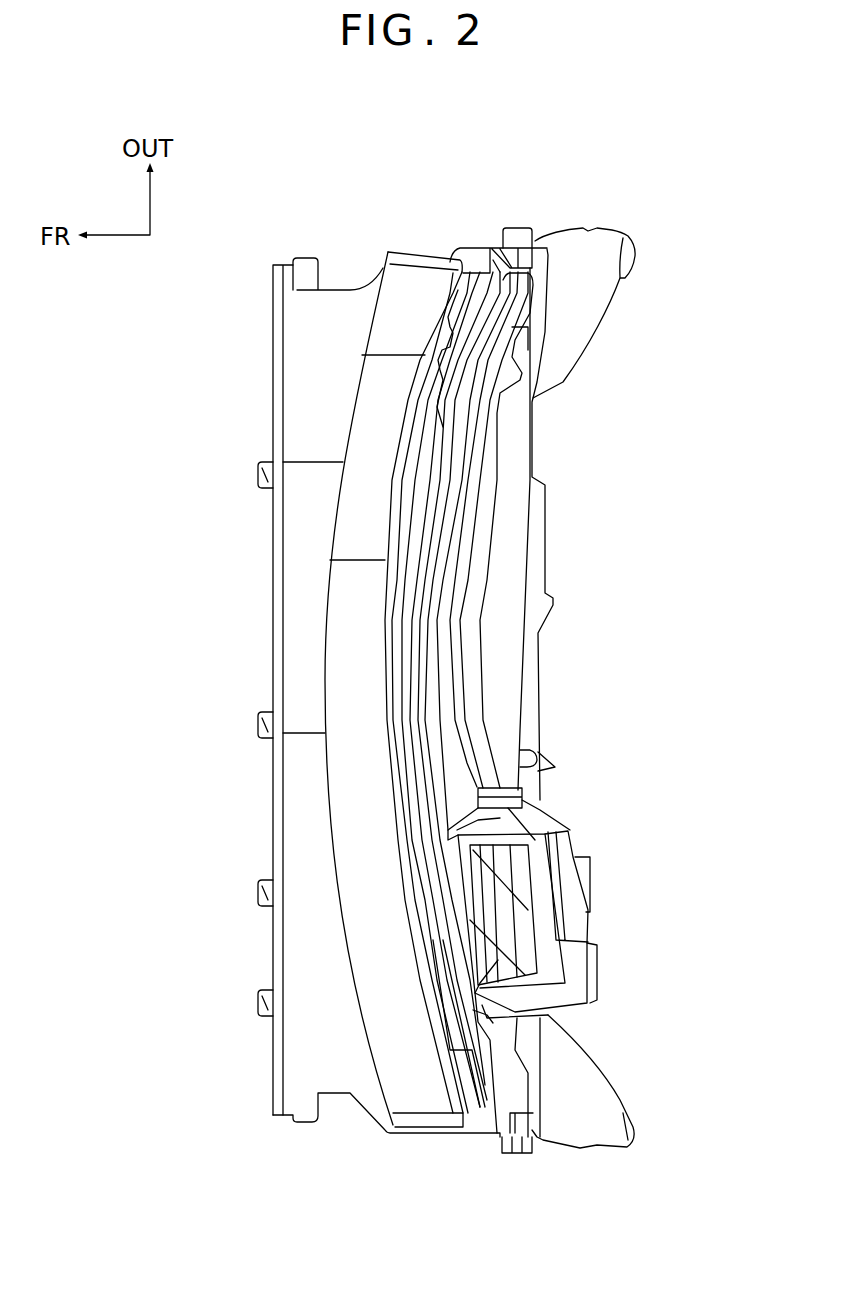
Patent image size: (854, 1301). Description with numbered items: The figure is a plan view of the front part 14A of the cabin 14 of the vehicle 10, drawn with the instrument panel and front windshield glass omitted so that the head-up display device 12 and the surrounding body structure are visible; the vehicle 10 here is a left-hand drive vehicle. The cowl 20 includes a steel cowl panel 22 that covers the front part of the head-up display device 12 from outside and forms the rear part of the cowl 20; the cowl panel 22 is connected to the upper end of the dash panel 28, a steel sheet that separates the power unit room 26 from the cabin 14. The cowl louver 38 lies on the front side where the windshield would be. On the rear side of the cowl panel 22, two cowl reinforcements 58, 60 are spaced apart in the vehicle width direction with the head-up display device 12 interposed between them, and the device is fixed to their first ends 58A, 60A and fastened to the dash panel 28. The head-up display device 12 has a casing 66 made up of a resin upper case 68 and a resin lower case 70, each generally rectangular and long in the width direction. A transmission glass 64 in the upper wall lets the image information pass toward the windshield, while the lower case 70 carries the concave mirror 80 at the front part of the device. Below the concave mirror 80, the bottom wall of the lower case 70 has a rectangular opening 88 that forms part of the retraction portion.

The vehicle 10 is at (668, 190).
The head-up display device 12 is at (610, 870).
The cabin 14 is at (750, 505).
The front part 14A is at (625, 514).
The cowl 20 is at (470, 243).
The cowl panel 22 is at (445, 812).
The power unit room 26 is at (206, 694).
The dash panel 28 is at (546, 618).
The cowl louver 38 is at (413, 277).
The cowl reinforcement 58 is at (622, 1095).
The first end 58A is at (545, 1037).
The cowl reinforcement 60 is at (544, 657).
The first end 60A is at (490, 773).
The transmission glass 64 is at (500, 912).
The casing 66 is at (597, 846).
The upper case 68 is at (594, 981).
The lower case 70 is at (598, 1008).
The concave mirror 80 is at (520, 915).
The opening 88 is at (527, 947).